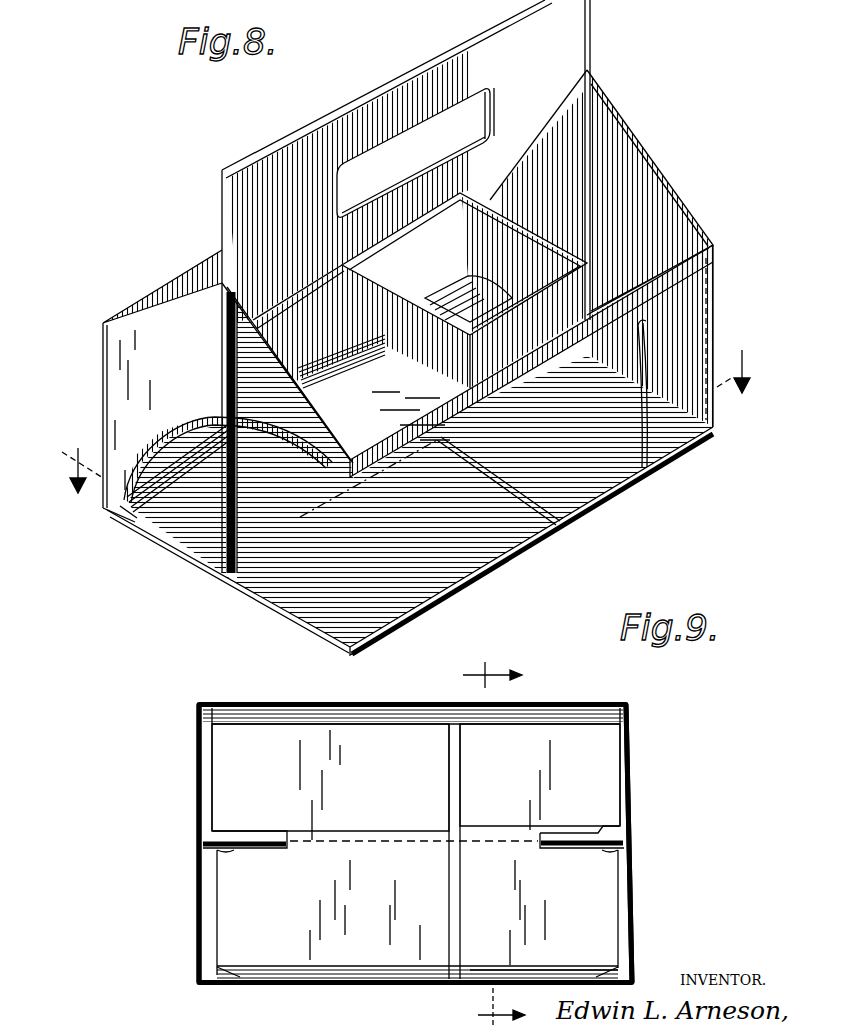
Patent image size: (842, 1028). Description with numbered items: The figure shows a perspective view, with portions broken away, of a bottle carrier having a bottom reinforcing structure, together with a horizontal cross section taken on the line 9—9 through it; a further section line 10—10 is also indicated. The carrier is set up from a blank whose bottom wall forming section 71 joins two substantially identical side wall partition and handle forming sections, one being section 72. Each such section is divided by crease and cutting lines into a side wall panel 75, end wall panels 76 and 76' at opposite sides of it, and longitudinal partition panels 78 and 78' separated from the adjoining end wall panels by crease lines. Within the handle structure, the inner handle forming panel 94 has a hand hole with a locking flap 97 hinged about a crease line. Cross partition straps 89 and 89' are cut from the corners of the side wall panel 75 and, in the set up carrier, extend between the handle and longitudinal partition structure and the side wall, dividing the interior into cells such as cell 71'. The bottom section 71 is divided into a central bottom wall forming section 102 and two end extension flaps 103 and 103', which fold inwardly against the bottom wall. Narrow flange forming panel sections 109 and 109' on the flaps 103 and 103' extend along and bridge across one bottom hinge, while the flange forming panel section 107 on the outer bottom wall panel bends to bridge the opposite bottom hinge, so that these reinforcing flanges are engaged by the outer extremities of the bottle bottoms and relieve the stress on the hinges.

In FIG. 8, the inner handle forming panel 94 is at (494, 42).
In FIG. 8, the locking flap 97 is at (400, 138).
In FIG. 8, the longitudinal partition panel 78 is at (575, 135).
In FIG. 9, the longitudinal partition panel 78 is at (582, 842).
In FIG. 8, the longitudinal partition panel 78' is at (188, 436).
In FIG. 9, the longitudinal partition panel 78' is at (245, 843).
In FIG. 8, the end wall panel 76 is at (654, 192).
In FIG. 9, the end wall panel 76 is at (652, 844).
In FIG. 8, the end wall panel 76' is at (190, 422).
In FIG. 9, the end wall panel 76' is at (176, 844).
In FIG. 8, the side wall partition and handle forming section 72 is at (700, 309).
In FIG. 9, the side wall partition and handle forming section 72 is at (397, 988).
In FIG. 8, the side wall panel 75 is at (200, 282).
In FIG. 9, the side wall panel 75 is at (364, 702).
In FIG. 8, the cross partition strap 89 is at (464, 288).
In FIG. 8, the cross partition strap 89' is at (447, 281).
In FIG. 8, the bottom wall forming section 71 is at (178, 503).
In FIG. 9, the bottom wall forming section 71 is at (300, 777).
In FIG. 8, the cell 71' is at (467, 361).
In FIG. 9, the cell 71' is at (568, 775).
In FIG. 8, the flange forming panel section 107 is at (130, 522).
In FIG. 9, the flange forming panel section 107 is at (558, 712).
In FIG. 8, the end extension flap 103 is at (410, 477).
In FIG. 9, the end extension flap 103 is at (191, 912).
In FIG. 8, the end extension flap 103' is at (622, 416).
In FIG. 9, the end extension flap 103' is at (641, 909).
In FIG. 8, the flange forming panel section 109 is at (531, 541).
In FIG. 9, the flange forming panel section 109 is at (417, 996).
In FIG. 9, the flange forming panel section 109' is at (544, 952).
In FIG. 8, the central bottom wall forming section 102 is at (557, 514).
In FIG. 8, the section line 9— 9 is at (398, 409).
In FIG. 9, the section line 10— 10 is at (474, 845).